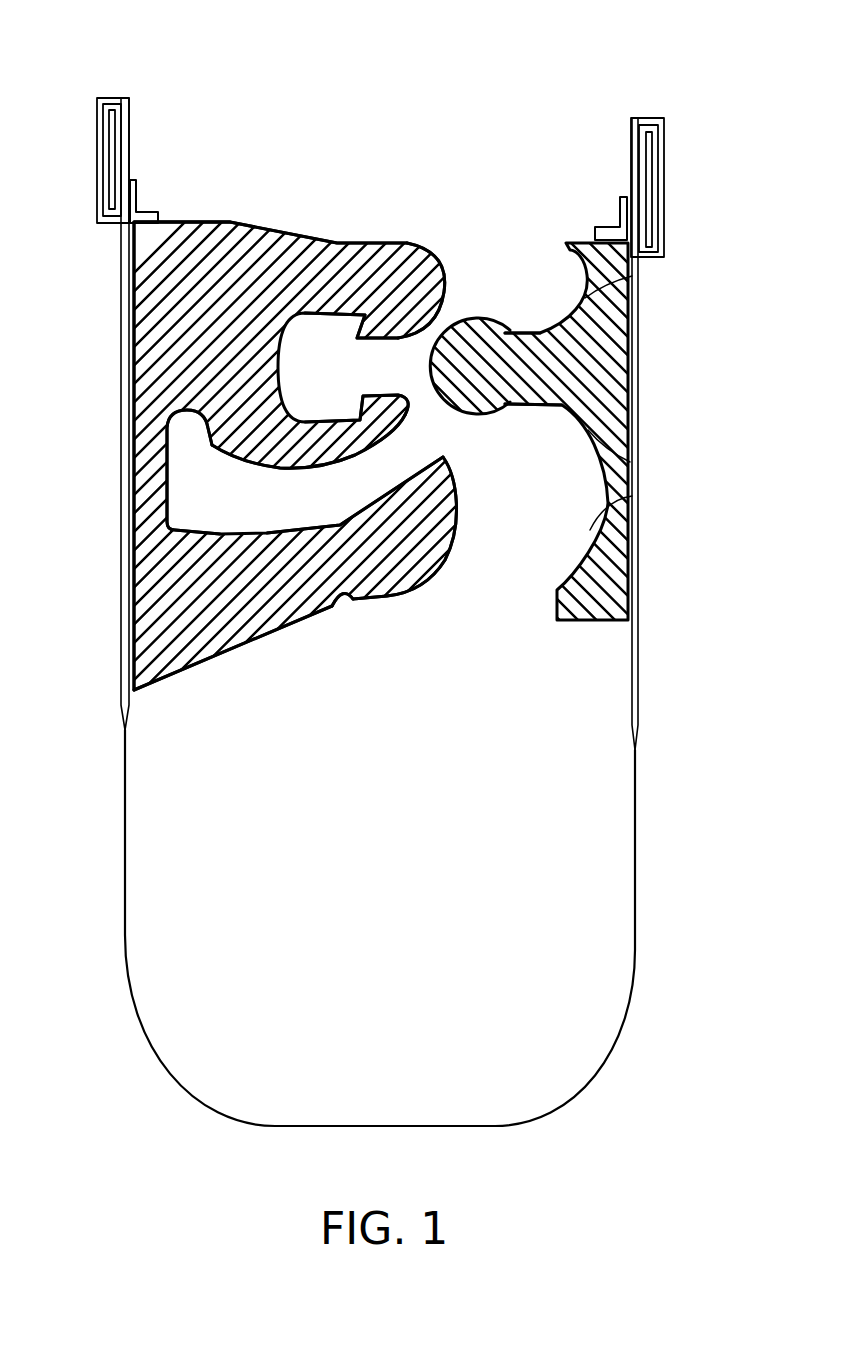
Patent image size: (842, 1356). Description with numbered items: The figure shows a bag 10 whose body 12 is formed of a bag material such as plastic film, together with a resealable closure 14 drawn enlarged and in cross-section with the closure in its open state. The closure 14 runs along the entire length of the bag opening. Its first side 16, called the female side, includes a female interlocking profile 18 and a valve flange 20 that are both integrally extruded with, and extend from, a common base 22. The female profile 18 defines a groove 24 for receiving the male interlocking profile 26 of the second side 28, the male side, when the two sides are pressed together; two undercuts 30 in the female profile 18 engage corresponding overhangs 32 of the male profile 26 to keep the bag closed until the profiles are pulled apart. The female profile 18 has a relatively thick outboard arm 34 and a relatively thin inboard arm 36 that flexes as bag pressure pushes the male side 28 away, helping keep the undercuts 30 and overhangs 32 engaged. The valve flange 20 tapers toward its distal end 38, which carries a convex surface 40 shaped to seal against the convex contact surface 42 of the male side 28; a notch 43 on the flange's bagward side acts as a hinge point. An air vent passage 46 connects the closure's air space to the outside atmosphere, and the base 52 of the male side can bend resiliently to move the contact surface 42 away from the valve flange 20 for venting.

The bag 10 is at (156, 52).
The body 12 is at (122, 812).
The resealable closure 14 is at (308, 165).
The first side 16 is at (184, 203).
The female interlocking profile 18 is at (410, 243).
The valve flange 20 is at (198, 663).
The common base 22 is at (121, 372).
The groove 24 is at (428, 415).
The male interlocking profile 26 is at (480, 318).
The second side 28 is at (572, 212).
The undercuts 30 is at (360, 334).
The overhangs 32 is at (632, 276).
The outboard arm 34 is at (314, 228).
The inboard arm 36 is at (302, 468).
The distal end 38 is at (474, 484).
The convex surface 40 is at (455, 557).
The contact surface 42 is at (632, 496).
The notch 43 is at (349, 617).
The air vent passage 46 is at (184, 480).
The base 52 is at (632, 368).